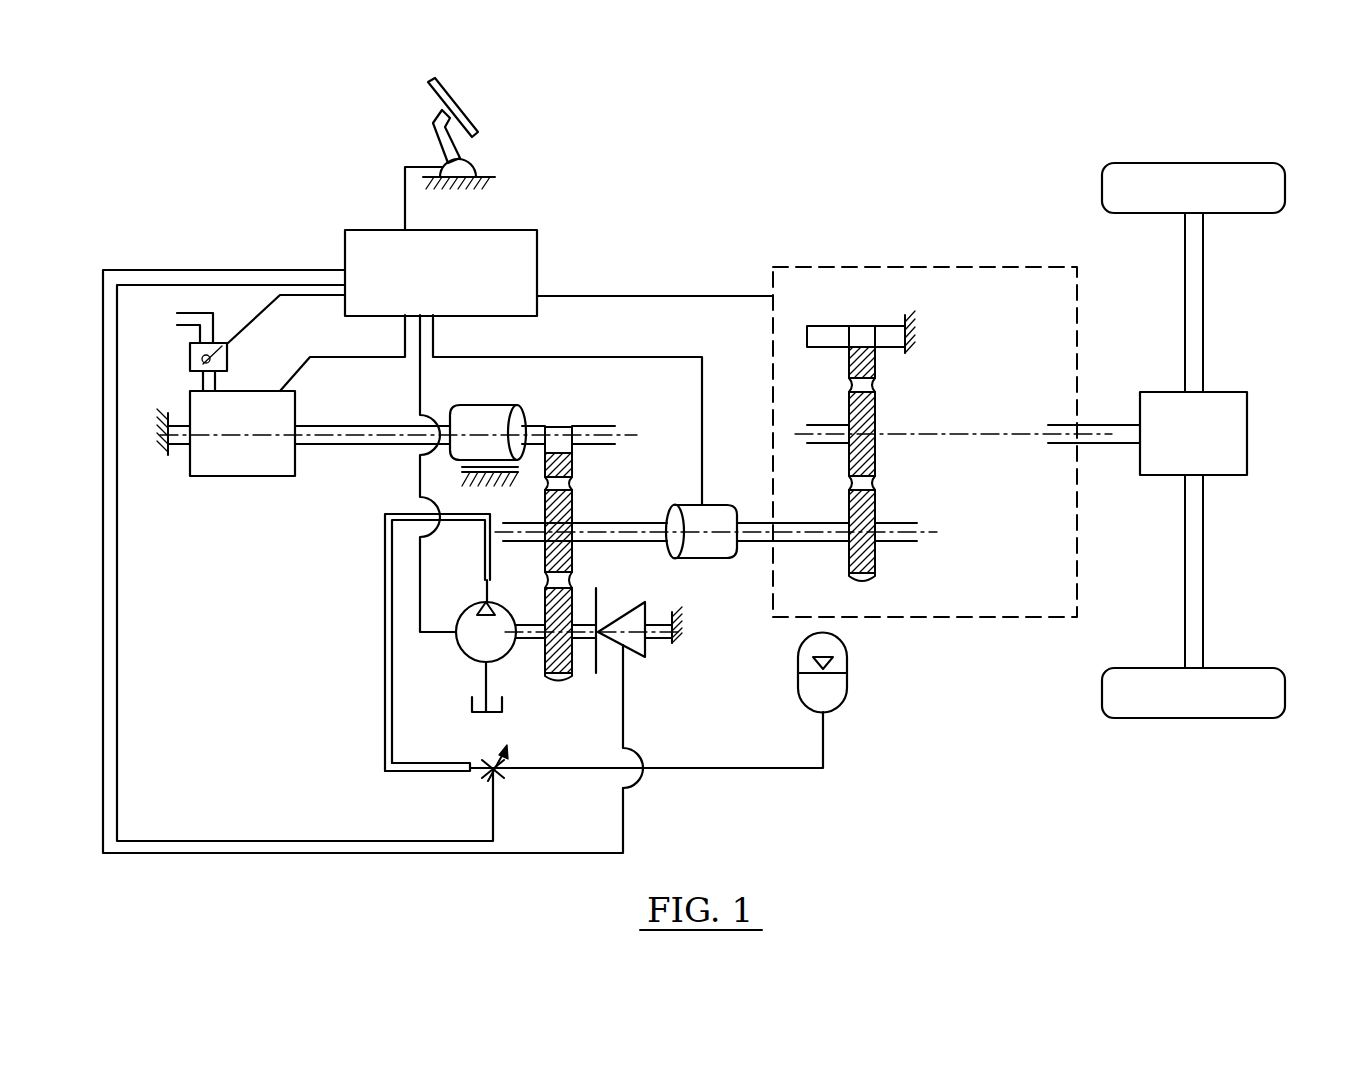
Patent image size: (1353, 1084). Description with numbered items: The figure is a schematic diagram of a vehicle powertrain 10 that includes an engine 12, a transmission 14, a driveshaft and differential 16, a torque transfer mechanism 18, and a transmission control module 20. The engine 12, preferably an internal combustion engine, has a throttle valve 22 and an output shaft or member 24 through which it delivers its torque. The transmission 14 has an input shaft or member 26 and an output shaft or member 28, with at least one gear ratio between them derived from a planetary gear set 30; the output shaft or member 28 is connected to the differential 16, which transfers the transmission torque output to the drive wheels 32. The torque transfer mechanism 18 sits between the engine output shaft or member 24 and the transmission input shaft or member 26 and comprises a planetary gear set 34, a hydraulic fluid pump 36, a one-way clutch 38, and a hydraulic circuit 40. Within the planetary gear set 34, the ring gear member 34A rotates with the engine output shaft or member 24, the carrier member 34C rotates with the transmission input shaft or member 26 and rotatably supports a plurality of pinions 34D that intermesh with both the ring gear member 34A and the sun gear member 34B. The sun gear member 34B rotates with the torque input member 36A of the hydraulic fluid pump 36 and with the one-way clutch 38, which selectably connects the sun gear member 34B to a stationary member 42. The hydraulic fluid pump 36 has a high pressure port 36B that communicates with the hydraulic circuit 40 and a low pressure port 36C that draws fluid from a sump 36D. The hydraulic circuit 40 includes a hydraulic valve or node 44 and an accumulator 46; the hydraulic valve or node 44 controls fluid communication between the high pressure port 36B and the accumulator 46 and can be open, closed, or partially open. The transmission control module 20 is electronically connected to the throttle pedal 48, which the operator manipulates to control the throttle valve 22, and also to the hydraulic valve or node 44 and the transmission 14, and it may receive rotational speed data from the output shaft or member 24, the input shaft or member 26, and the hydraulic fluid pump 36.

The vehicle powertrain 10 is at (666, 174).
The engine 12 is at (226, 478).
The transmission 14 is at (868, 265).
The driveshaft and differential 16 is at (1228, 437).
The torque transfer mechanism 18 is at (667, 685).
The transmission control module 20 is at (422, 287).
The throttle valve 22 is at (188, 355).
The output shaft or member 24 is at (358, 424).
The input shaft or member 26 is at (752, 522).
The output shaft or member 28 is at (1103, 448).
The planetary gear set 30 is at (870, 598).
The drive wheels 32 is at (1202, 178).
The planetary gear set 34 is at (617, 527).
The ring gear member 34A is at (573, 466).
The sun gear member 34B is at (567, 684).
The carrier member 34C is at (628, 521).
The pinions 34D is at (573, 553).
The hydraulic fluid pump 36 is at (508, 652).
The torque input member 36A is at (525, 645).
The high pressure port 36B is at (483, 590).
The low pressure port 36C is at (480, 668).
The sump 36D is at (485, 715).
The one-way clutch 38 is at (650, 650).
The hydraulic circuit 40 is at (385, 590).
The stationary member 42 is at (682, 608).
The hydraulic valve or node 44 is at (499, 776).
The accumulator 46 is at (836, 710).
The throttle pedal 48 is at (460, 103).